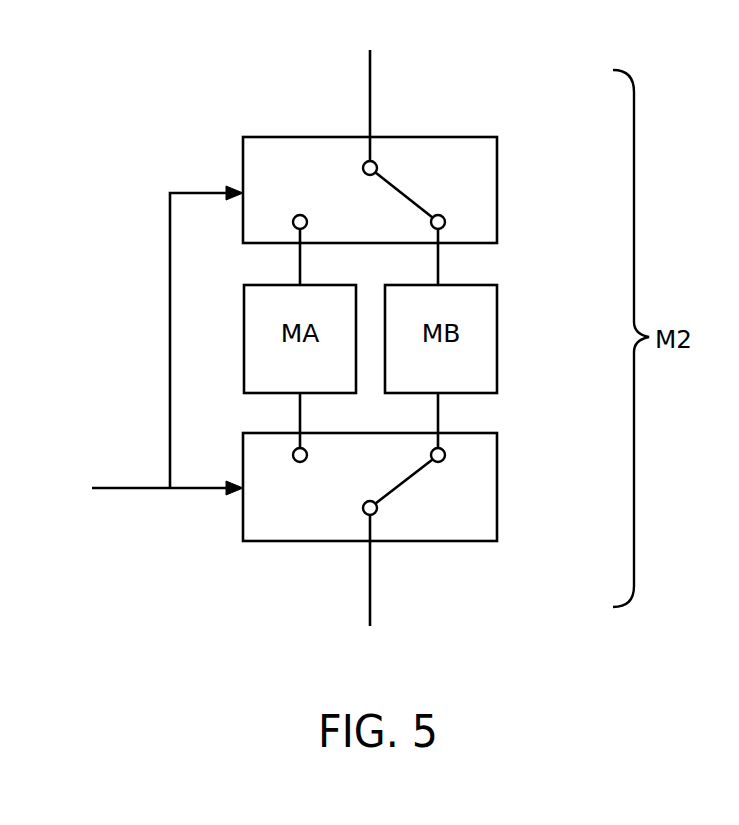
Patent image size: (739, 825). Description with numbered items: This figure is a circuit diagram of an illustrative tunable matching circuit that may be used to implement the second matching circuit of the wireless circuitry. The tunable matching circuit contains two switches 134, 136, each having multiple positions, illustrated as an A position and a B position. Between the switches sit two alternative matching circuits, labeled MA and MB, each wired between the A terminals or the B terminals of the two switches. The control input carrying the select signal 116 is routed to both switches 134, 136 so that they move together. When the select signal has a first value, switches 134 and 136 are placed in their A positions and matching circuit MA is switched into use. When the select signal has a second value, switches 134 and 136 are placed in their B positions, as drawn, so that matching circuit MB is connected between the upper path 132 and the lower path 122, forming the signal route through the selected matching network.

The select signal line 116 is at (130, 489).
The path 122 is at (368, 573).
The path 132 is at (370, 84).
The switch 134 is at (497, 183).
The switch 136 is at (497, 482).